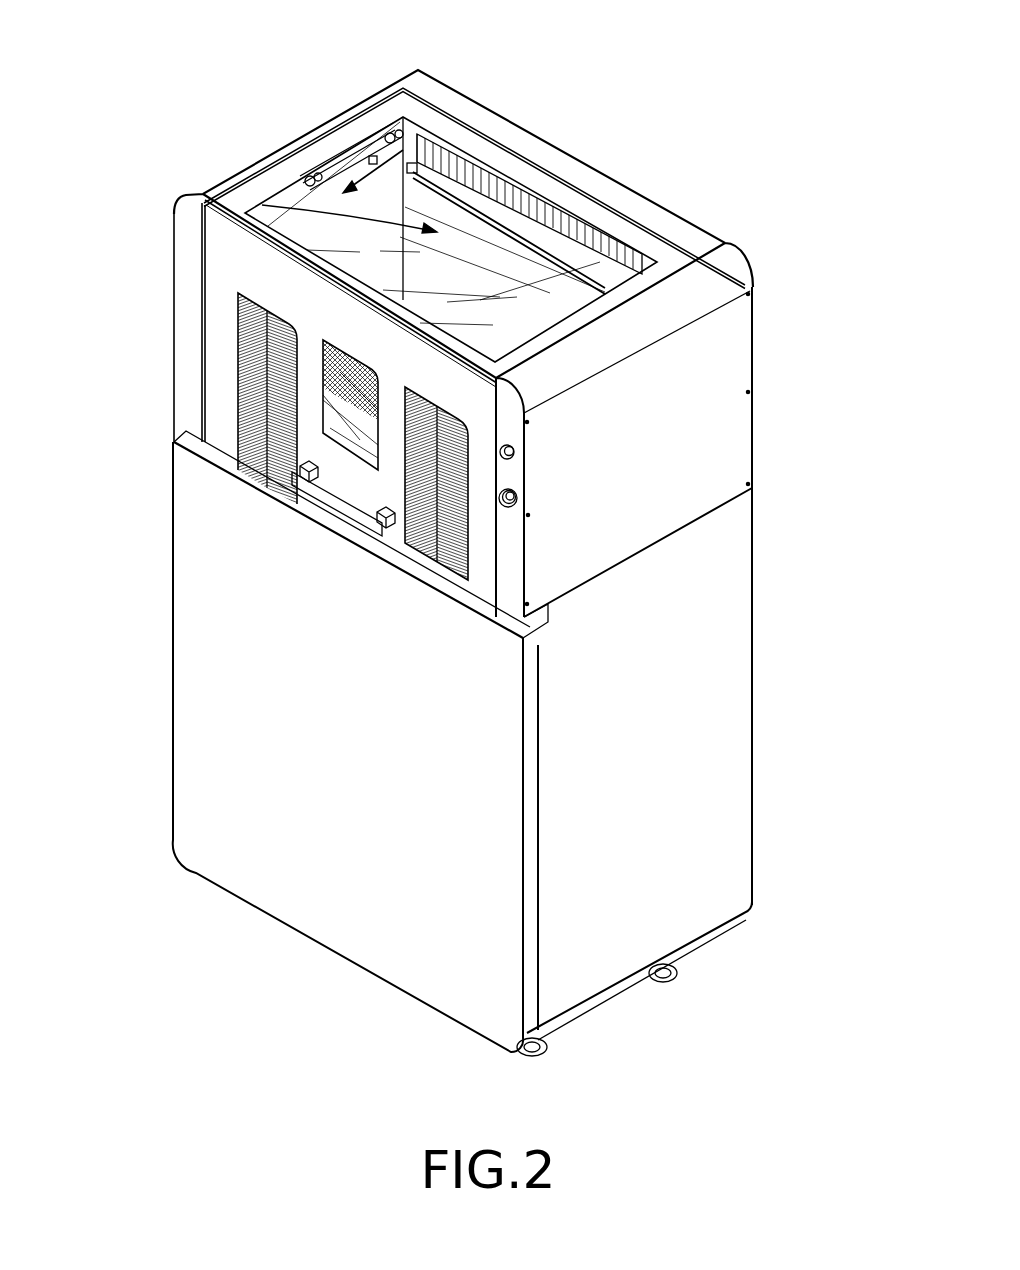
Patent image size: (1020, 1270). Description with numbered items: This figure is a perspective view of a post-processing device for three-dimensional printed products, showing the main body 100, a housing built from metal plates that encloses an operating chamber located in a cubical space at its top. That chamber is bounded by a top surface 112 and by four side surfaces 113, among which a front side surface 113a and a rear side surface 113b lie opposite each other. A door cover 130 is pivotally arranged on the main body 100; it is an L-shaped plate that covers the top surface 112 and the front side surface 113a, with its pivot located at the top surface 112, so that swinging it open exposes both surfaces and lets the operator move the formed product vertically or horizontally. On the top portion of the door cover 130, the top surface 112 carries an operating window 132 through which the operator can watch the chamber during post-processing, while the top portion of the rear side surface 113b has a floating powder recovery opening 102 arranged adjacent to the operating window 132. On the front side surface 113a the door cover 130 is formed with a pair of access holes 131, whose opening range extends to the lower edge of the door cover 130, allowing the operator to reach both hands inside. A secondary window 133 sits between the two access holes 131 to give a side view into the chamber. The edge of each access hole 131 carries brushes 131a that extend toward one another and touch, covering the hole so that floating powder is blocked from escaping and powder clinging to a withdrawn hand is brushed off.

The main body 100 is at (764, 337).
The floating powder recovery opening 102 is at (560, 224).
The top surface 112 is at (363, 125).
The side surfaces 113 is at (406, 130).
The front side surface 113a is at (230, 268).
The rear side surface 113b is at (282, 192).
The door cover 130 is at (317, 156).
The access hole 131 is at (240, 345).
The brush 131a is at (282, 420).
The operating window 132 is at (478, 148).
The secondary window 133 is at (345, 435).